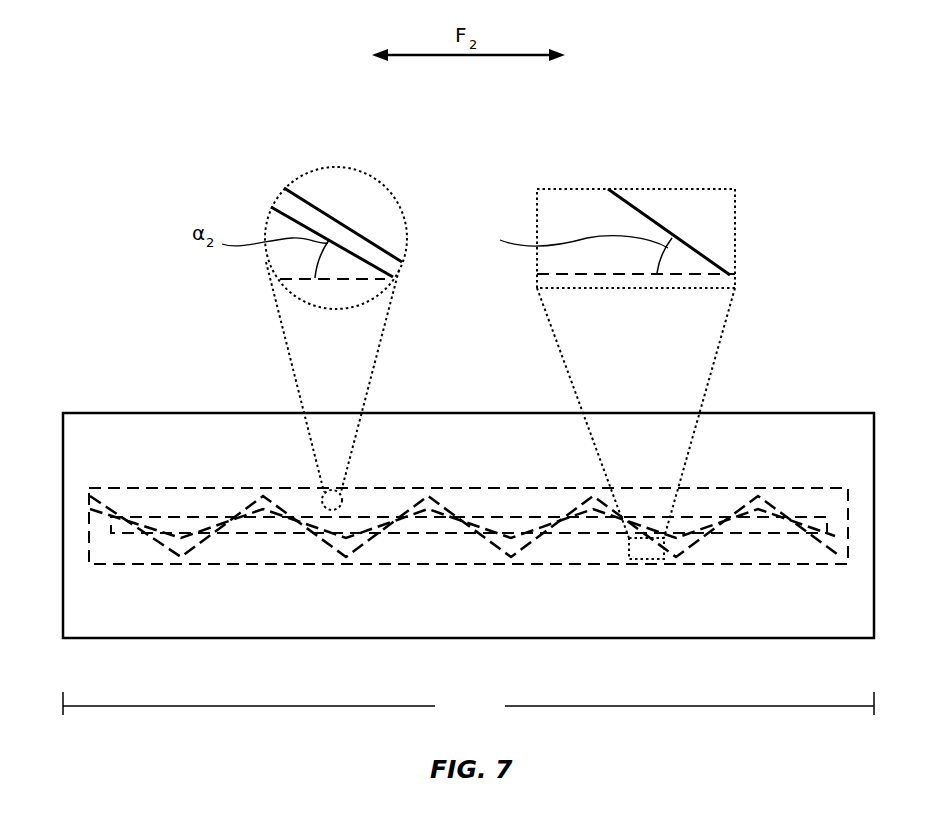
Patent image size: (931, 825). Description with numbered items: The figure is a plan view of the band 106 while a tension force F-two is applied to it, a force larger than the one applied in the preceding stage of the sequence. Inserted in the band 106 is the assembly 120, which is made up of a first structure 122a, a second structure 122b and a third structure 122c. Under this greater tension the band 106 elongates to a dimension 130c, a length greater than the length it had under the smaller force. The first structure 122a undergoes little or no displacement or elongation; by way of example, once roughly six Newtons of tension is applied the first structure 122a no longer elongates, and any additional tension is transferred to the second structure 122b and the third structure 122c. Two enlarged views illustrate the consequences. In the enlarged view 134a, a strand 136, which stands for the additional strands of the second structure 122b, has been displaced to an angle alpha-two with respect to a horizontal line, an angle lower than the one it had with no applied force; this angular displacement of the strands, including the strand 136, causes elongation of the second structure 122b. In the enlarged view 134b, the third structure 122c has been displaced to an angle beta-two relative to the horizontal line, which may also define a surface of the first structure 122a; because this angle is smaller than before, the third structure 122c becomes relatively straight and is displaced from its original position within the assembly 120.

The band 106 is at (36, 386).
The assembly 120 is at (233, 566).
The first structure 122a is at (148, 518).
The second structure 122b is at (227, 488).
The third structure 122c is at (435, 496).
The dimension 130c is at (468, 705).
The enlarged view 134a is at (288, 190).
The enlarged view 134b is at (570, 189).
The strand 136 is at (360, 236).